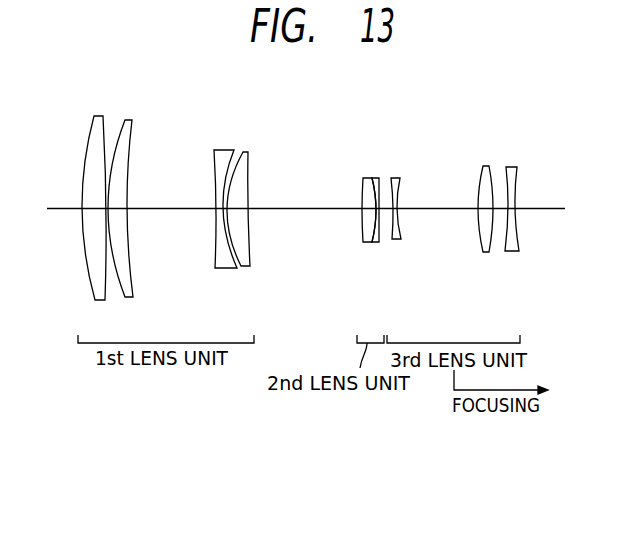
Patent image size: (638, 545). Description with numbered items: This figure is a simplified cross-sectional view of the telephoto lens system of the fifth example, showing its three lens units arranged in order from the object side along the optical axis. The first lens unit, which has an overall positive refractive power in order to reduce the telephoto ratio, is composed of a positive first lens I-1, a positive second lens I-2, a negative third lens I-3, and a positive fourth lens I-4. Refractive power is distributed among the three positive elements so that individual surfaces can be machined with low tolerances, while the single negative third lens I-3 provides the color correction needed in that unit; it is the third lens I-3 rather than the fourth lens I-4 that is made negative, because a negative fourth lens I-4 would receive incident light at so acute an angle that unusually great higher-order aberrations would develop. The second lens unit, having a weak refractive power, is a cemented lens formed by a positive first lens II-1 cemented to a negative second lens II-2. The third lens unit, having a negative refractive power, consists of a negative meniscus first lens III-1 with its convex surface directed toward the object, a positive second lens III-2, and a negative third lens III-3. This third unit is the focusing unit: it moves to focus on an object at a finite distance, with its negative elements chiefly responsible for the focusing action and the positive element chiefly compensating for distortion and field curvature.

The positive first lens I-1 is at (100, 115).
The positive second lens I-2 is at (129, 118).
The negative third lens I-3 is at (225, 150).
The positive fourth lens I-4 is at (248, 152).
The positive first lens II-1 is at (365, 178).
The negative second lens II-2 is at (377, 178).
The negative meniscus first lens III-1 is at (400, 178).
The positive second lens III-2 is at (487, 166).
The negative third lens III-3 is at (512, 167).